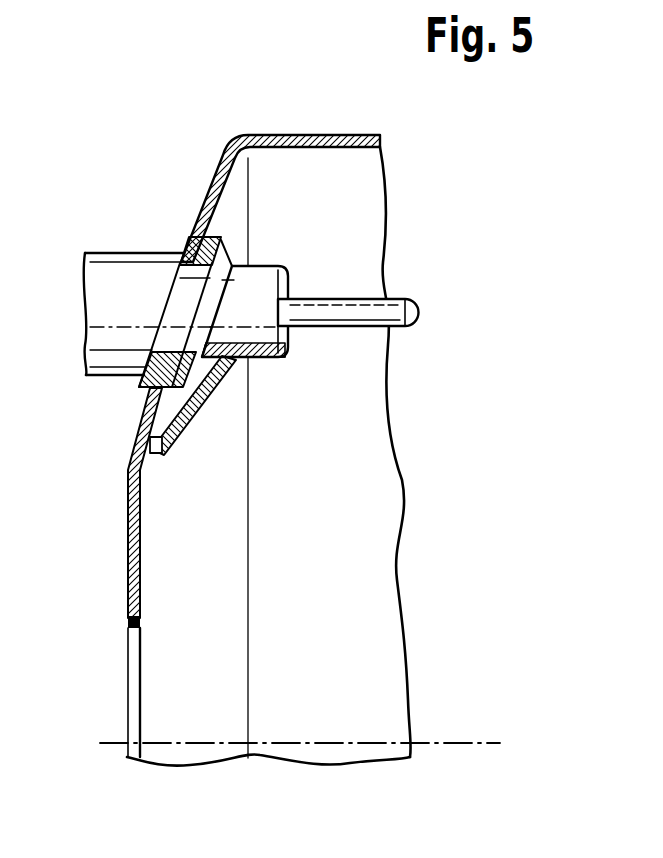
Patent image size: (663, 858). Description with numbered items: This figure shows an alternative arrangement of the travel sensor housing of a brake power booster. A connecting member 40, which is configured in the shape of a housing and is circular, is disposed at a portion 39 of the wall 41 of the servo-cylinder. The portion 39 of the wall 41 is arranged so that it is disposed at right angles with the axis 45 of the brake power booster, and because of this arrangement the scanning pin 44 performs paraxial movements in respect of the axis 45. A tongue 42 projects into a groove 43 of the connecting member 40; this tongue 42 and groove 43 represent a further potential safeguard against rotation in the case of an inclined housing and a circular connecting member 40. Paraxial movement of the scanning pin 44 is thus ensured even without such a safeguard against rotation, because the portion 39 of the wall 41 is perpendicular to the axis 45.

The portion of the wall 39 is at (217, 197).
The connecting member 40 is at (262, 288).
The wall 41 is at (128, 568).
The tongue 42 is at (181, 410).
The groove 43 is at (266, 362).
The scanning pin 44 is at (397, 308).
The axis 45 is at (483, 741).